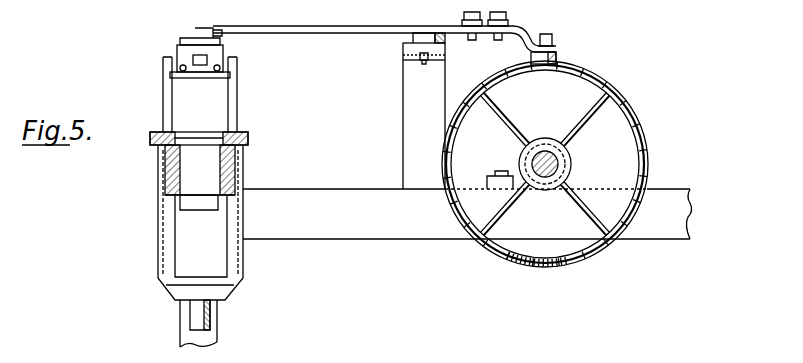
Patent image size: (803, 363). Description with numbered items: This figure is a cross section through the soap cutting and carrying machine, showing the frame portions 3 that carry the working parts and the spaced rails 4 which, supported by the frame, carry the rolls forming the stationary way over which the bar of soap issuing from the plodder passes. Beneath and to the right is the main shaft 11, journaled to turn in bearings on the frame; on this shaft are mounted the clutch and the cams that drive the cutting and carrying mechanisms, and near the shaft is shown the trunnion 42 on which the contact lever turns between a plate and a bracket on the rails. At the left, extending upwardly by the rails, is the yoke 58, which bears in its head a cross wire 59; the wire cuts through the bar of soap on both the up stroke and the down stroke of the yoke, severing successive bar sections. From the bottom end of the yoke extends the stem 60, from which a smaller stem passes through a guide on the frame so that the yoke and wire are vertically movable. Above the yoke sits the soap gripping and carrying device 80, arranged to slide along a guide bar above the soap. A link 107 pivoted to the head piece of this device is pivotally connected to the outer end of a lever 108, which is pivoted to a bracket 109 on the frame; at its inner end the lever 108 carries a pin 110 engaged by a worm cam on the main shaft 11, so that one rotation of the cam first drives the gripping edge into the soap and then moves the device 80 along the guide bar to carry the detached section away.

The frame portions 3 is at (467, 214).
The rails 4 is at (170, 177).
The main shaft 11 is at (558, 162).
The trunnion 42 is at (605, 86).
The yoke 58 is at (160, 252).
The cross wire 59 is at (198, 140).
The stem 60 is at (214, 320).
The soap gripping and carrying device 80 is at (193, 56).
The link 107 is at (210, 30).
The lever 108 is at (384, 32).
The bracket 109 is at (410, 116).
The pin 110 is at (563, 60).